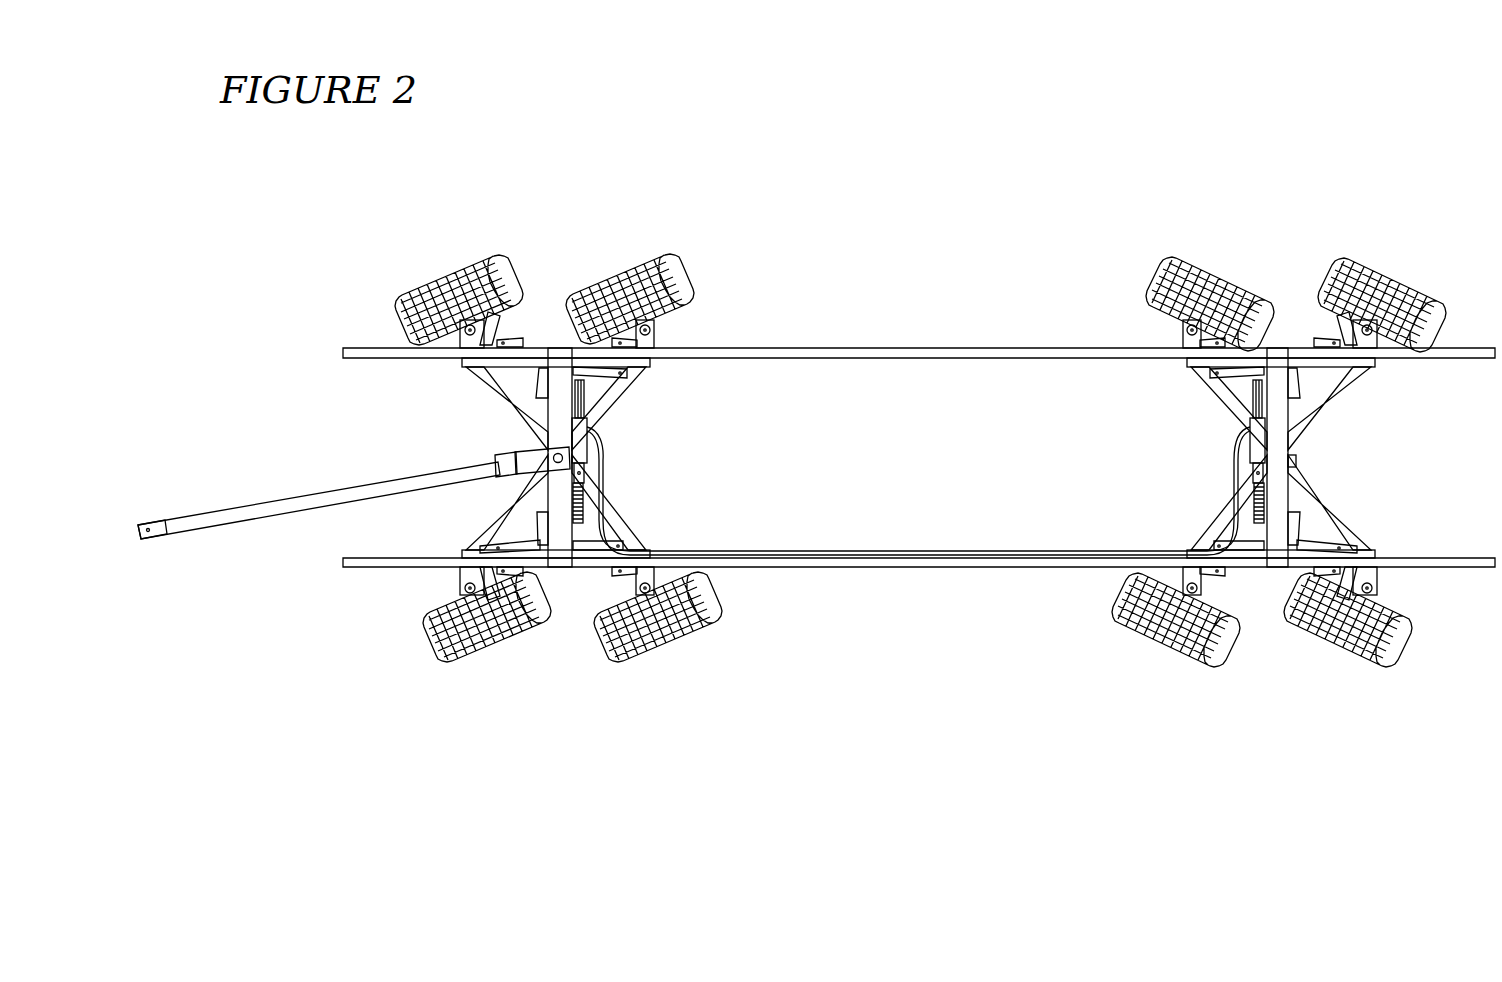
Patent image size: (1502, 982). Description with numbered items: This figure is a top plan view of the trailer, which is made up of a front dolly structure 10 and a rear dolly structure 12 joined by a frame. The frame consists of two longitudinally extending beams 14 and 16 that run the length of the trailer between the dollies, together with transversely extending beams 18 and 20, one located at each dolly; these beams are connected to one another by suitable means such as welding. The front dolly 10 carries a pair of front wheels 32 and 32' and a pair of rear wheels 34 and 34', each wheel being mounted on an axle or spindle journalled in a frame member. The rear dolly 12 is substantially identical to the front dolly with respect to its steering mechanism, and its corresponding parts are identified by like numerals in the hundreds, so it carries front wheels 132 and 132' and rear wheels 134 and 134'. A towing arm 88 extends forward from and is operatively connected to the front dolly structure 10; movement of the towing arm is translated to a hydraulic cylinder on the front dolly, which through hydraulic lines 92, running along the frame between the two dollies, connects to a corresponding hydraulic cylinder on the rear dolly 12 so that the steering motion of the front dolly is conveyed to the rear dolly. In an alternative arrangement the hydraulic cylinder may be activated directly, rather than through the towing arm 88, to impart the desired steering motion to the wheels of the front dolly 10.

The front dolly structure 10 is at (632, 469).
The rear dolly structure 12 is at (1333, 465).
The longitudinally extending beam 14 is at (887, 358).
The longitudinally extending beam 16 is at (922, 566).
The transversely extending beam 18 is at (560, 364).
The transversely extending beam 20 is at (1275, 393).
The front wheel 32 is at (467, 267).
The rear wheel 34 is at (640, 271).
The front wheel 32' is at (487, 653).
The rear wheel 34' is at (657, 647).
The towing arm 88 is at (277, 508).
The hydraulic lines 92 is at (1015, 552).
The front wheel 132 is at (1210, 279).
The rear wheel 134 is at (1382, 283).
The front wheel 132' is at (1140, 620).
The rear wheel 134' is at (1372, 647).